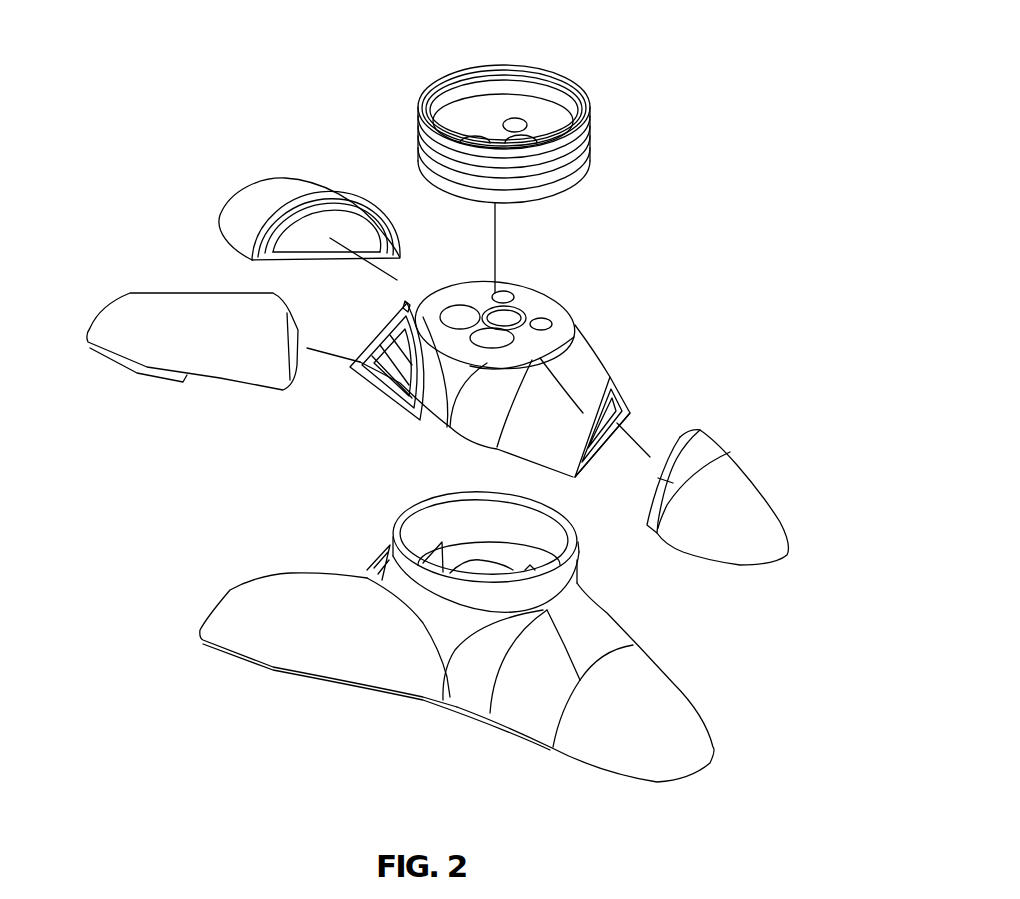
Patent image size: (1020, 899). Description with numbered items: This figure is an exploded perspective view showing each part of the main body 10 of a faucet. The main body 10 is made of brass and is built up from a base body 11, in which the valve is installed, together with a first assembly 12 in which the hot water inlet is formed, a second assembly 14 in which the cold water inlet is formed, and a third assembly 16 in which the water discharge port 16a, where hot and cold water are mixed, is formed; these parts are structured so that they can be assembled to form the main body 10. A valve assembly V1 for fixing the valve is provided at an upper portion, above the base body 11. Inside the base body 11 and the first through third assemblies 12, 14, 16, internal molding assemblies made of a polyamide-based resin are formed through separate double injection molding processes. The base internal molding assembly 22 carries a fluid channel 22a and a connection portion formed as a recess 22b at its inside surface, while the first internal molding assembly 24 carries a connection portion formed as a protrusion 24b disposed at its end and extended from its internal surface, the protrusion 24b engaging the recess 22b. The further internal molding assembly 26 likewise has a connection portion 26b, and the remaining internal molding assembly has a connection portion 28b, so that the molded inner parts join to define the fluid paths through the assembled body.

The main body 10 is at (240, 50).
The base body 11 is at (443, 647).
The first assembly 12 is at (687, 683).
The second assembly 14 is at (230, 214).
The third assembly 16 is at (268, 648).
The water discharge port 16a is at (220, 657).
The base internal molding assembly 22 is at (573, 320).
The fluid channel 22a is at (515, 300).
The recess 22b is at (383, 400).
The first internal molding assembly 24 is at (717, 467).
The protrusion 24b is at (650, 507).
The internal molding assembly 26 is at (307, 235).
The connection portion 26b is at (250, 262).
The connection portion 28b is at (297, 370).
The valve assembly V1 is at (587, 150).